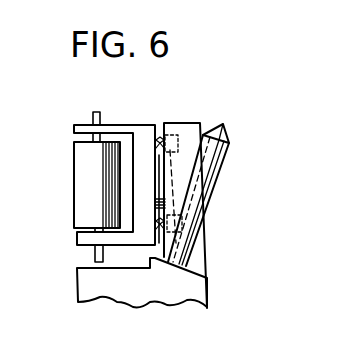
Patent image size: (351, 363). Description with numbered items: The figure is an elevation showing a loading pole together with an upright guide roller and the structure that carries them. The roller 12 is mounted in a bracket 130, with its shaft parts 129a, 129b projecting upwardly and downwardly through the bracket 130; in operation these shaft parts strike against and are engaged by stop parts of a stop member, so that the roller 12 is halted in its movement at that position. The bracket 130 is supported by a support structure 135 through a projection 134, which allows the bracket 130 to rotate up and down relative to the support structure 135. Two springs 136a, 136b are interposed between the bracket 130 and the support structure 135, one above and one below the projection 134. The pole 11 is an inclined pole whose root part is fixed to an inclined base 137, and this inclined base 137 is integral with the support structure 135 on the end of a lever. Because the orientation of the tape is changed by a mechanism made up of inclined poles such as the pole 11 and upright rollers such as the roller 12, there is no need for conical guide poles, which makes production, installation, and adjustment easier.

The pole 11 is at (213, 187).
The roller 12 is at (80, 192).
The shaft part 129a is at (92, 115).
The shaft part 129b is at (90, 255).
The bracket 130 is at (122, 120).
The projection 134 is at (160, 182).
The support structure 135 is at (188, 125).
The spring 136a is at (163, 135).
The spring 136b is at (153, 262).
The inclined base 137 is at (197, 263).